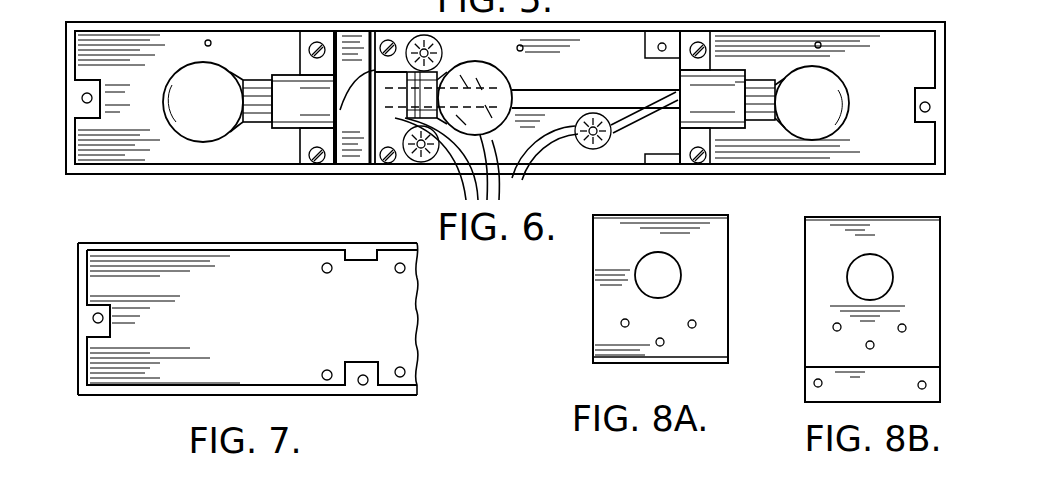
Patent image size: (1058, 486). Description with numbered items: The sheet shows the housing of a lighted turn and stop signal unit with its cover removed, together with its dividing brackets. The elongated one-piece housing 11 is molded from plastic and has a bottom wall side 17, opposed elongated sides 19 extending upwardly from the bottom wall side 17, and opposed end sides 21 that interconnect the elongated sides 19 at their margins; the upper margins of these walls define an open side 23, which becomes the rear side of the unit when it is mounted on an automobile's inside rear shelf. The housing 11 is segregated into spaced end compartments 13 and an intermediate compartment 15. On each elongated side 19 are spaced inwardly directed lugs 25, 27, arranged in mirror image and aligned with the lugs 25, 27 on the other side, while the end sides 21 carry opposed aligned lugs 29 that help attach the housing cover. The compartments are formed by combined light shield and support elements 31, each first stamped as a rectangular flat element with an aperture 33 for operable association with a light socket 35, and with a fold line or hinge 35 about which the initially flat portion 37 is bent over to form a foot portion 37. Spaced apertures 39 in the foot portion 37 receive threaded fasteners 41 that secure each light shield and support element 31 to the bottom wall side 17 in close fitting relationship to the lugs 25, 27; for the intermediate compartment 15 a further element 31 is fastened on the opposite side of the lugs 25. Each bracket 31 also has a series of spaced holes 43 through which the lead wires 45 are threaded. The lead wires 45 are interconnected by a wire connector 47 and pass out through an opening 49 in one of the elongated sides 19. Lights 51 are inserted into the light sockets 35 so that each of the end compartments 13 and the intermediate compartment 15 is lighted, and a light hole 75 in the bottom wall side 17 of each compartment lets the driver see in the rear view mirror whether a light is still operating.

In FIG. 7, the elongated housing 11 is at (101, 234).
In FIG. 6, the end compartments 13 is at (897, 58).
In FIG. 6, the intermediate compartment 15 is at (594, 60).
In FIG. 7, the bottom wall side 17 is at (181, 288).
In FIG. 6, the opposed elongated sides 19 is at (606, 168).
In FIG. 7, the opposed elongated sides 19 is at (149, 243).
In FIG. 6, the opposed end sides 21 is at (70, 60).
In FIG. 7, the opposed end sides 21 is at (77, 243).
In FIG. 7, the open side 23 is at (247, 278).
In FIG. 6, the inwardly directed lugs 25 is at (332, 168).
In FIG. 7, the inwardly directed lugs 25 is at (358, 254).
In FIG. 6, the inwardly directed lugs 27 is at (657, 44).
In FIG. 6, the lugs 29 is at (79, 98).
In FIG. 7, the lugs 29 is at (86, 311).
In FIG. 6, the combined light shield and support element 31 is at (328, 135).
In FIG. 8A, the combined light shield and support element 31 is at (587, 306).
In FIG. 8B, the combined light shield and support element 31 is at (920, 316).
In FIG. 6, the aperture 33 is at (740, 84).
In FIG. 8A, the aperture 33 is at (683, 278).
In FIG. 8B, the aperture 33 is at (893, 281).
In FIG. 6, the light socket 35 is at (260, 98).
In FIG. 8B, the light socket 35 is at (906, 367).
In FIG. 8A, the foot portion 37 is at (703, 364).
In FIG. 8B, the foot portion 37 is at (910, 392).
In FIG. 8B, the spaced apertures 39 is at (813, 384).
In FIG. 6, the threaded fasteners 41 is at (325, 45).
In FIG. 8A, the spaced holes 43 is at (697, 323).
In FIG. 8B, the spaced holes 43 is at (833, 328).
In FIG. 6, the lead wires 45 is at (336, 72).
In FIG. 6, the wire connector 47 is at (442, 52).
In FIG. 6, the opening 49 is at (470, 172).
In FIG. 6, the lights 51 is at (475, 82).
In FIG. 6, the light hole 75 is at (523, 46).